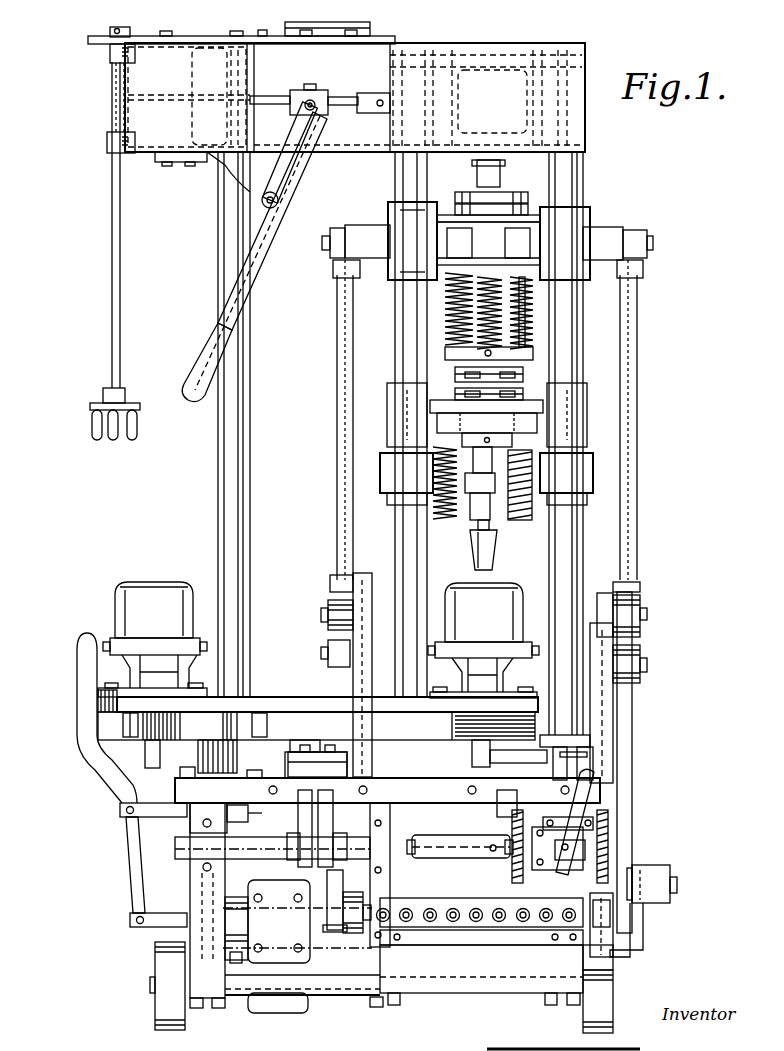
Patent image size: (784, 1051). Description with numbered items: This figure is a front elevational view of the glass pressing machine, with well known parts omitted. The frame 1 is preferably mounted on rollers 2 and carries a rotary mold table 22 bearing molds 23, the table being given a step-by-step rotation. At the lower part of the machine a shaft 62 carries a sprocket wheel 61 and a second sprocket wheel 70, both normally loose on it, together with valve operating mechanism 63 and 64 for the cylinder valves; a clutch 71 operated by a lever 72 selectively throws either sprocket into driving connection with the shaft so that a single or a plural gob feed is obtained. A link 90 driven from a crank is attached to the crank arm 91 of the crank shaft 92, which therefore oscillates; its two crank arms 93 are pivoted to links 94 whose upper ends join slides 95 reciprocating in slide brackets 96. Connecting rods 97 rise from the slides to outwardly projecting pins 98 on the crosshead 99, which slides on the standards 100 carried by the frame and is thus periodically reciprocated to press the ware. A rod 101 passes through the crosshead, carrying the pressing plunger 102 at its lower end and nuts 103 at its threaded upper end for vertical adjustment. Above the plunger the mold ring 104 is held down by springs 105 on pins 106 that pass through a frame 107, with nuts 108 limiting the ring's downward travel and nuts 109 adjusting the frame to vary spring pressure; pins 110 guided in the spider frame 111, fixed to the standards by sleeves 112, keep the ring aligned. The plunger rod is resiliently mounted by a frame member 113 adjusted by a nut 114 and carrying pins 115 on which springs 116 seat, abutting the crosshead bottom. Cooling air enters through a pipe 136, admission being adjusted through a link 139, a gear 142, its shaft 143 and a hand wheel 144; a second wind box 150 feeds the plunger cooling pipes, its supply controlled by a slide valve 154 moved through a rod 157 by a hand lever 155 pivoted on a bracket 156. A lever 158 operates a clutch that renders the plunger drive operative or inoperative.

The frame 1 is at (545, 960).
The rollers 2 is at (168, 1010).
The rotary mold table 22 is at (265, 705).
The molds 23 is at (115, 600).
The sprocket wheel 61 is at (510, 860).
The shaft 62 is at (415, 850).
The valve operating mechanism 63 is at (305, 838).
The valve operating mechanism 64 is at (507, 815).
The sprocket wheel 70 is at (600, 838).
The clutch 71 is at (550, 855).
The lever 72 is at (600, 803).
The link 90 is at (668, 866).
The crank arm 91 is at (640, 916).
The crank shaft 92 is at (457, 945).
The crank arms 93 is at (350, 896).
The links 94 is at (337, 665).
The slides 95 is at (372, 620).
The slide brackets 96 is at (345, 605).
The connecting rods 97 is at (340, 380).
The pins 98 is at (372, 232).
The crosshead 99 is at (447, 220).
The standards 100 is at (580, 325).
The rod 101 is at (495, 187).
The pressing plunger 102 is at (474, 555).
The nuts 103 is at (540, 208).
The mold ring 104 is at (492, 545).
The springs 105 is at (440, 500).
The pins 106 is at (437, 420).
The frame 107 is at (543, 415).
The nuts 108 is at (443, 393).
The nuts 109 is at (520, 393).
The pins 110 is at (520, 510).
The spider frame 111 is at (535, 498).
The sleeves 112 is at (385, 458).
The frame member 113 is at (533, 352).
The nut 114 is at (530, 376).
The pins 115 is at (525, 312).
The springs 116 is at (443, 302).
The pipe 136 is at (380, 32).
The link 139 is at (263, 33).
The gear 142 is at (88, 40).
The shaft 143 is at (112, 238).
The hand wheel 144 is at (90, 420).
The wind box 150 is at (588, 133).
The slide valve 154 is at (390, 98).
The hand lever 155 is at (215, 265).
The bracket 156 is at (290, 185).
The rod 157 is at (332, 112).
The lever 158 is at (78, 722).